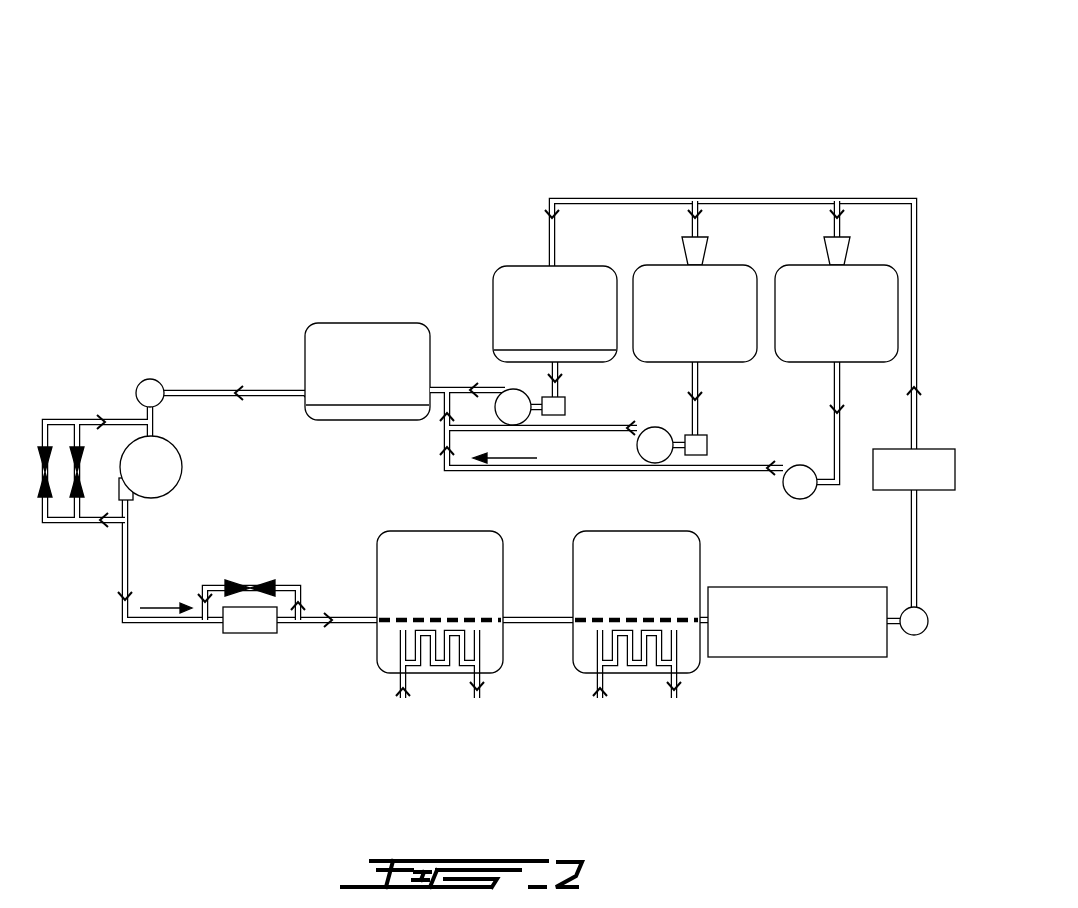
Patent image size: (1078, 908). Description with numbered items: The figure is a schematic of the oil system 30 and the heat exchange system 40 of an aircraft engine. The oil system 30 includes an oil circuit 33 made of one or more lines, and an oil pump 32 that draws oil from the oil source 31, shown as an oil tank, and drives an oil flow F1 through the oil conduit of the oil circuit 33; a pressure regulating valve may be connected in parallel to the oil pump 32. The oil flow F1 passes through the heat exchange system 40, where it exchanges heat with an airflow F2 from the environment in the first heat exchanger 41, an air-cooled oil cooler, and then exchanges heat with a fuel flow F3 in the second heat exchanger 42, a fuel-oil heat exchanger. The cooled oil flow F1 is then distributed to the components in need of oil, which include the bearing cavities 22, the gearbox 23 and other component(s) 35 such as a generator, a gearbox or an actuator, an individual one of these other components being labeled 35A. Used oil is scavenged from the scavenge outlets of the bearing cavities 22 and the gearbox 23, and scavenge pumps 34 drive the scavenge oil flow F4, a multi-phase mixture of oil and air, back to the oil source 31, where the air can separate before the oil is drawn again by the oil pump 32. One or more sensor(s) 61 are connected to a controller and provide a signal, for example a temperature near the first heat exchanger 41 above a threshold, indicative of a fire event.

The oil system 30 is at (733, 165).
The bearing cavities 22 is at (727, 265).
The gearbox 23 is at (519, 266).
The oil source 31 is at (362, 323).
The oil pump 32 is at (152, 483).
The oil circuit 33 is at (160, 623).
The scavenge pumps 34 is at (512, 393).
The other component(s) 35 is at (827, 657).
The oil filter 35A is at (315, 623).
The heat exchange system 40 is at (718, 680).
The first heat exchanger 41 is at (378, 665).
The second heat exchanger 42 is at (638, 531).
The sensor(s) 61 is at (893, 492).
The oil flow F1 is at (153, 603).
The airflow F2 is at (400, 663).
The fuel flow F3 is at (597, 660).
The scavenge oil flow F4 is at (515, 458).